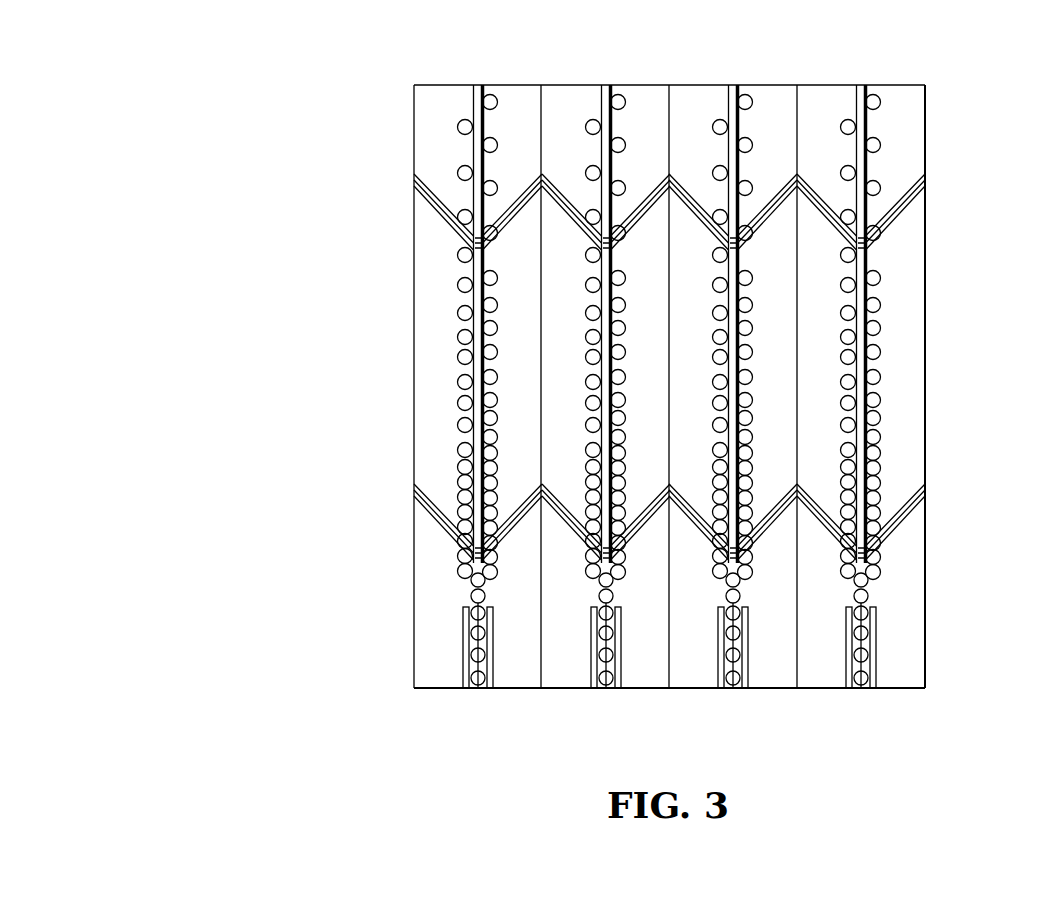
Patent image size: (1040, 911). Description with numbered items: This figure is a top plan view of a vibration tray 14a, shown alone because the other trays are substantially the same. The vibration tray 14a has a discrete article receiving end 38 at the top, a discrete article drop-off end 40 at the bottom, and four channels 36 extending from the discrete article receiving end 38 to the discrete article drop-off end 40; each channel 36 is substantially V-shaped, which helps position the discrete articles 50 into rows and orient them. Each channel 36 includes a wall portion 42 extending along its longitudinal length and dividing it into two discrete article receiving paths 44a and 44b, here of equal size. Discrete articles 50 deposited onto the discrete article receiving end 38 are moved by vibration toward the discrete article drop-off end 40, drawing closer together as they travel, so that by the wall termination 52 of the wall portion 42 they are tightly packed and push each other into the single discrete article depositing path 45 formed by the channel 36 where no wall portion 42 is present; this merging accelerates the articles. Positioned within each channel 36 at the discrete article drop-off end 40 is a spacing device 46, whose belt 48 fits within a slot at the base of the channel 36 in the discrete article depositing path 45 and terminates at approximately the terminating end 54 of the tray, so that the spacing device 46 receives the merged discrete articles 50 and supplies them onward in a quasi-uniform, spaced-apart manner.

The vibration tray 14a is at (286, 105).
The channel 36 is at (515, 403).
The discrete article receiving end 38 is at (940, 100).
The discrete article drop-off end 40 is at (960, 660).
The wall portion 42 is at (856, 105).
The discrete article receiving path 44a is at (824, 102).
The discrete article receiving path 44b is at (893, 102).
The discrete article depositing path 45 is at (879, 593).
The spacing device 46 is at (853, 696).
The belt 48 is at (853, 644).
The discrete article 50 is at (463, 356).
The wall termination 52 is at (866, 580).
The terminating end 54 is at (915, 688).